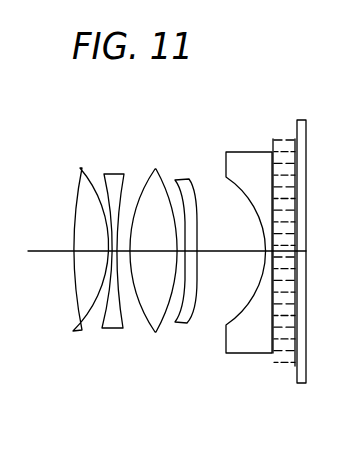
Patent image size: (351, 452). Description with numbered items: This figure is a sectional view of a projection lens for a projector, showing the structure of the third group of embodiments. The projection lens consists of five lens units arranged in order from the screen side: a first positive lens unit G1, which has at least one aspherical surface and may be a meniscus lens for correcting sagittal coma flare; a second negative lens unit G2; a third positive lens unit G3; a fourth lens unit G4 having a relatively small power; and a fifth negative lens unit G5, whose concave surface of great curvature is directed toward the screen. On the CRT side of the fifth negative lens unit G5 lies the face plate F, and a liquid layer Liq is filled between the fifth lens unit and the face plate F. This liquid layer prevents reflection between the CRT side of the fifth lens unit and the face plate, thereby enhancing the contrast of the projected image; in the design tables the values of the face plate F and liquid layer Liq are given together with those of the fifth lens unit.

The first positive lens unit G1 is at (80, 334).
The second negative lens unit G2 is at (112, 330).
The third positive lens unit G3 is at (155, 334).
The fourth lens unit G4 is at (182, 326).
The fifth negative lens unit G5 is at (268, 253).
The liquid layer Liq is at (282, 162).
The face plate F is at (300, 120).